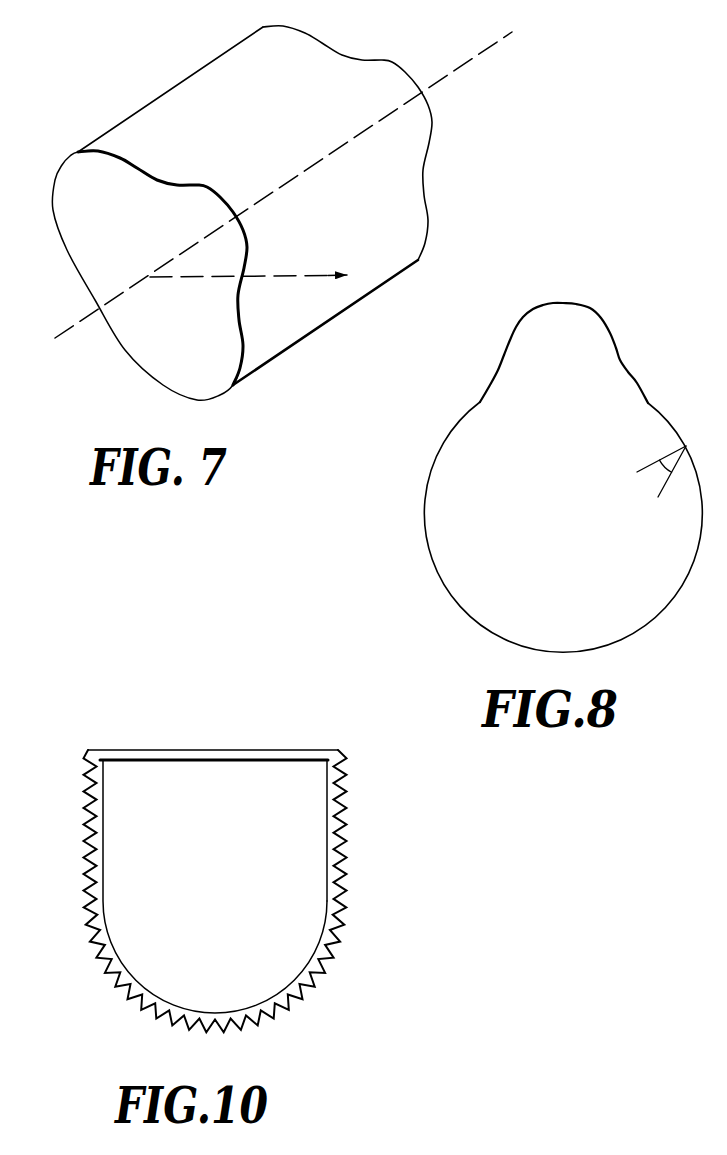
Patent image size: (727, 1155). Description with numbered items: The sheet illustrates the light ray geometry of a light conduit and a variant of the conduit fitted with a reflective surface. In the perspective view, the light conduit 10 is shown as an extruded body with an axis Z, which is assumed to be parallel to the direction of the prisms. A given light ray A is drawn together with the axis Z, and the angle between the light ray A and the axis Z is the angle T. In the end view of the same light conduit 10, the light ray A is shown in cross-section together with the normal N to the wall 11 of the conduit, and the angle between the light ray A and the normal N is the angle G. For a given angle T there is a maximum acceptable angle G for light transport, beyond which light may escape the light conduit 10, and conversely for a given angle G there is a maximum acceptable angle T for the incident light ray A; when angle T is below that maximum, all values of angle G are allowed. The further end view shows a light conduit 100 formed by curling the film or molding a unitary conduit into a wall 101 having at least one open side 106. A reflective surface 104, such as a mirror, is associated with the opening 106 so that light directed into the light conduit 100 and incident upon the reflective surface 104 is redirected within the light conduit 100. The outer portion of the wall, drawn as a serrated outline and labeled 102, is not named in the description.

In FIG. 7, the light conduit 10 is at (173, 88).
In FIG. 8, the light conduit 10 is at (673, 421).
In FIG. 7, the wall 11 is at (232, 391).
In FIG. 8, the wall 11 is at (457, 423).
In FIG. 7, the axis Z is at (72, 327).
In FIG. 7, the angle T is at (291, 184).
In FIG. 7, the light ray A is at (298, 279).
In FIG. 8, the light ray A is at (690, 511).
In FIG. 8, the normal N is at (660, 459).
In FIG. 8, the angle G is at (624, 446).
In FIG. 10, the light conduit 100 is at (334, 957).
In FIG. 10, the wall 101 is at (335, 905).
In FIG. 10, the smooth surface 102 is at (345, 855).
In FIG. 10, the reflective surface 104 is at (260, 750).
In FIG. 10, the open side 106 is at (102, 768).